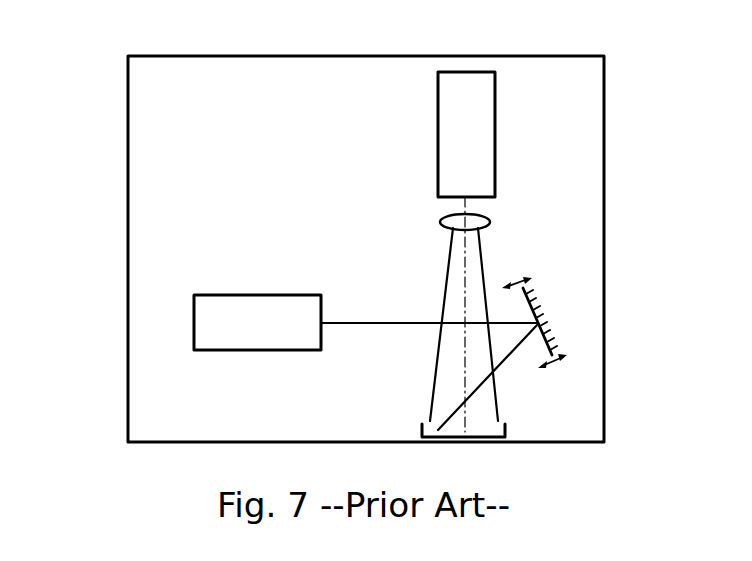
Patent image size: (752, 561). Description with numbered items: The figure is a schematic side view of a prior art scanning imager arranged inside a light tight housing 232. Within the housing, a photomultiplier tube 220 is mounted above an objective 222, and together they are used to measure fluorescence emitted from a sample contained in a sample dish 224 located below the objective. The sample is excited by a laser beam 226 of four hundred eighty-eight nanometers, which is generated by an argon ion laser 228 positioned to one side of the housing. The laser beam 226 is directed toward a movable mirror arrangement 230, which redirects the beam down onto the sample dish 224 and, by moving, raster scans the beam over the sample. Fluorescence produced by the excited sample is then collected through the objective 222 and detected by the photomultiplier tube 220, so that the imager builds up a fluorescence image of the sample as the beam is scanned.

The photomultiplier tube 220 is at (495, 129).
The objective 222 is at (490, 222).
The sample dish 224 is at (507, 431).
The laser beam 226 is at (503, 361).
The argon ion laser 228 is at (194, 323).
The movable mirror arrangement 230 is at (543, 316).
The light tight housing 232 is at (128, 123).